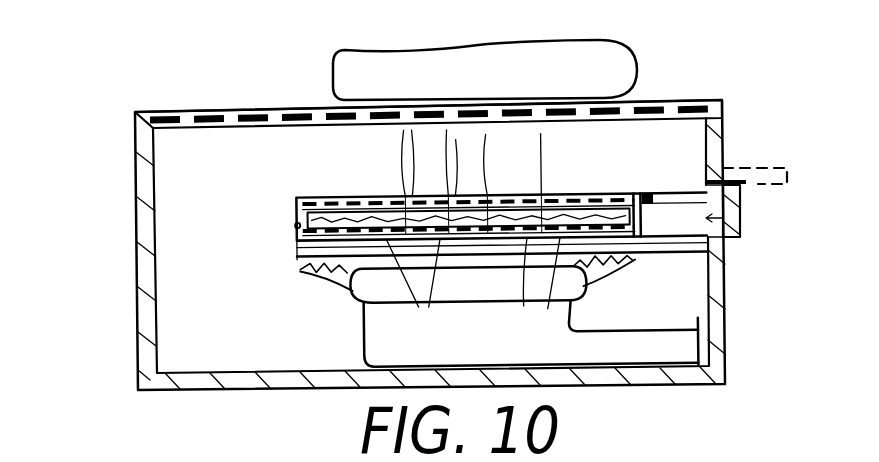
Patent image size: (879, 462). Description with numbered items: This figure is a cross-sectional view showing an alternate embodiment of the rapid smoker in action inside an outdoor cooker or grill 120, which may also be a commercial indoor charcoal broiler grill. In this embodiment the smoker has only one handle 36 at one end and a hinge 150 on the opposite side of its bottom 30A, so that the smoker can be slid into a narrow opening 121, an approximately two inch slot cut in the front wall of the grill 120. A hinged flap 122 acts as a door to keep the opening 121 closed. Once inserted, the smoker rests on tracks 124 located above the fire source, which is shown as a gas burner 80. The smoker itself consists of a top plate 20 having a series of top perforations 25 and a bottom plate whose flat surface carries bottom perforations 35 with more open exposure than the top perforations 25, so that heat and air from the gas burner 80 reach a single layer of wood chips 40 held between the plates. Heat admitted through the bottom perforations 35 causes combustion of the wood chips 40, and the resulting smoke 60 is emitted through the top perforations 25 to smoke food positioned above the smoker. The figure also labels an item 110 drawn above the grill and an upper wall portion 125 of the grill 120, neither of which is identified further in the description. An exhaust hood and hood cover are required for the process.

The pressing pad 110 is at (334, 62).
The lid 125 is at (143, 113).
The outdoor cooker or grill 120 is at (137, 323).
The hinge 150 is at (295, 226).
The top plate 20 is at (338, 196).
The top perforations 25 is at (406, 196).
The smoke 60 is at (537, 192).
The handle 36 is at (680, 192).
The hinged flap 122 is at (742, 184).
The narrow opening 121 is at (740, 228).
The tracks 124 is at (673, 262).
The bottom 30A is at (300, 263).
The gas burner 80 is at (360, 293).
The bottom perforations 35 is at (414, 298).
The wood chips 40 is at (532, 297).